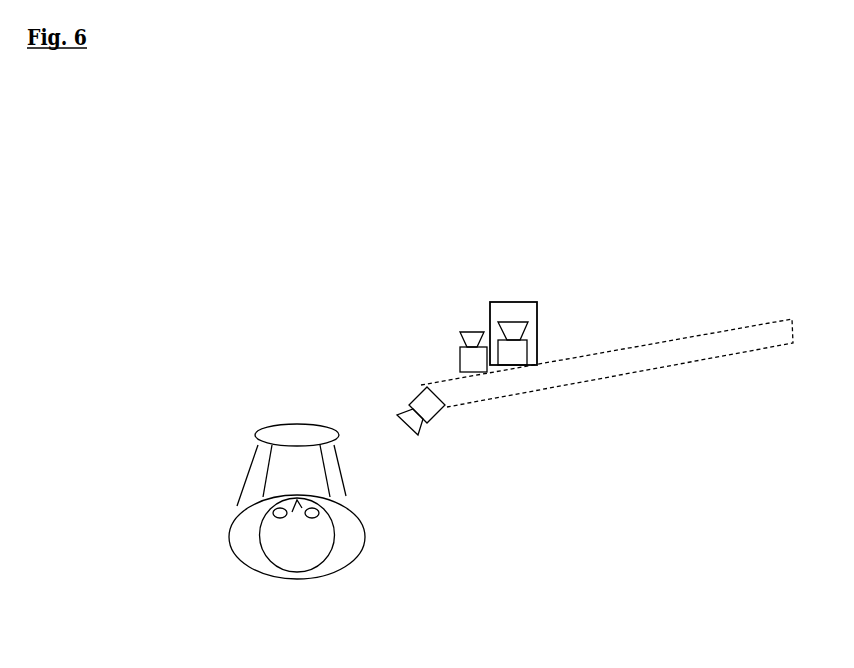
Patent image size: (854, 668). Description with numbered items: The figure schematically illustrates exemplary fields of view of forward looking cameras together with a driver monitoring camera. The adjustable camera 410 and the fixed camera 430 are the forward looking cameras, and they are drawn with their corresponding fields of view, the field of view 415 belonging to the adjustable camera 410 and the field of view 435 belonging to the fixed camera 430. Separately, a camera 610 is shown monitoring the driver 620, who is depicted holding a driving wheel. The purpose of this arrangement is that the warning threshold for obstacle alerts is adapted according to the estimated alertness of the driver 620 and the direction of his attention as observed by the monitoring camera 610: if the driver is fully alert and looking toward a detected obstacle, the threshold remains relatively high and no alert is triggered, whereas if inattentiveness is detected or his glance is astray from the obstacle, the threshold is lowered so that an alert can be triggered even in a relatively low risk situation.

The adjustable camera 410 is at (457, 362).
The field of view of the adjustable camera 415 is at (455, 209).
The fixed camera 430 is at (538, 345).
The field of view of the fixed camera 435 is at (511, 200).
The driver monitoring camera 610 is at (442, 416).
The driver 620 is at (228, 526).